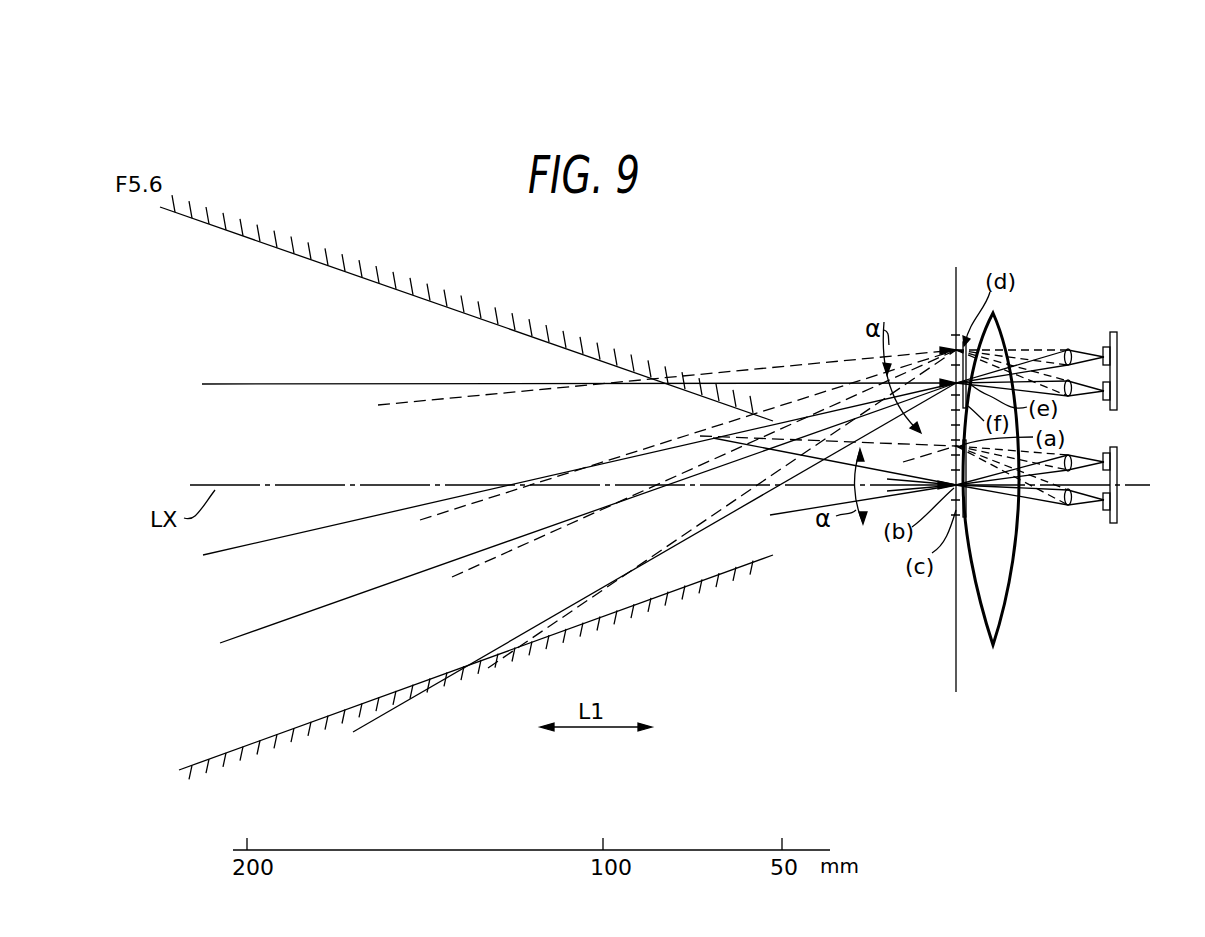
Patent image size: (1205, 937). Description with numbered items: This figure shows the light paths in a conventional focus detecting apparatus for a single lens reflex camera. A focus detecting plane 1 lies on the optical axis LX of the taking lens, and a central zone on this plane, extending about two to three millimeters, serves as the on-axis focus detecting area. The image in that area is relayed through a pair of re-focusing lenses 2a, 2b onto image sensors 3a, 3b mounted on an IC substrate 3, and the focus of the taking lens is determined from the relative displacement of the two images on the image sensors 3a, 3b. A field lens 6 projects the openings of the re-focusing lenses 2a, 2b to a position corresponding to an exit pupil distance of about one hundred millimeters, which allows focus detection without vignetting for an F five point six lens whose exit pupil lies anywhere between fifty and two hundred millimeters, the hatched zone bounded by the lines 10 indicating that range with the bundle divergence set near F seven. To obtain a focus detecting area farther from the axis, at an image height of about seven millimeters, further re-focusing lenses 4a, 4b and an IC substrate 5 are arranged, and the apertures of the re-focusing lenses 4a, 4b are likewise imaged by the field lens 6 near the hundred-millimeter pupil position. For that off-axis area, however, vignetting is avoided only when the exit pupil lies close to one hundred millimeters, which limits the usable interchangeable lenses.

The focus detecting plane 1 is at (956, 682).
The re-focusing lens 2a is at (1068, 456).
The re-focusing lens 2b is at (1068, 505).
The IC substrate 3 is at (1116, 523).
The image sensor 3a is at (1118, 459).
The image sensor 3b is at (1105, 511).
The re-focusing lens 4a is at (1068, 348).
The re-focusing lens 4b is at (1068, 397).
The IC substrate 5 is at (1116, 335).
The field lens 6 is at (996, 642).
The aperture limiting edge 10 is at (215, 226).